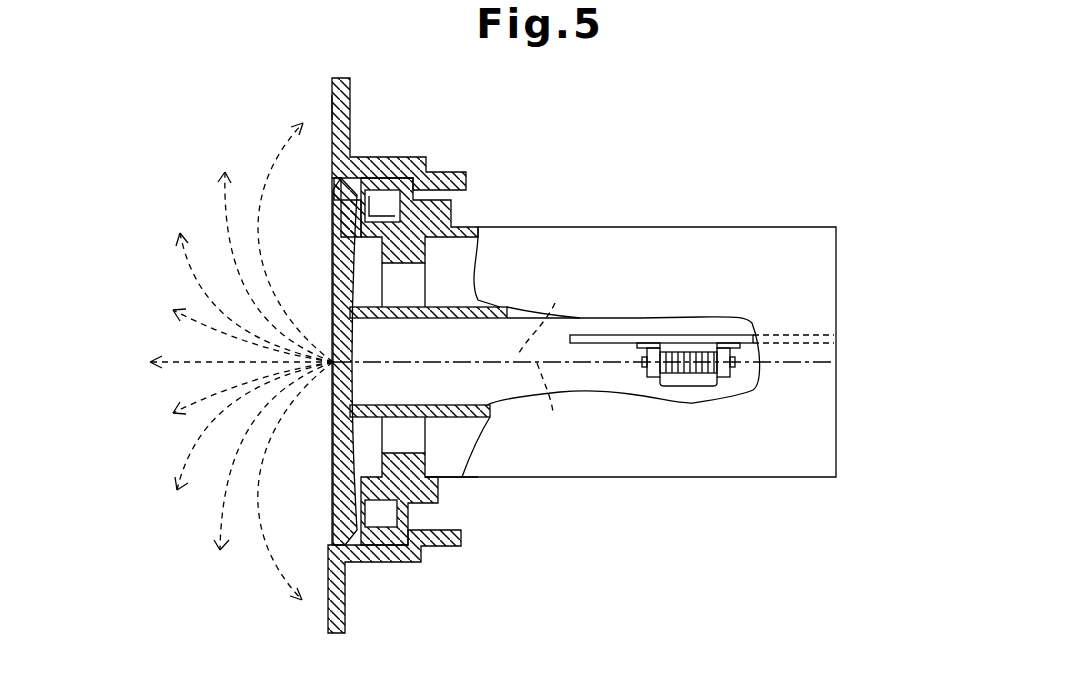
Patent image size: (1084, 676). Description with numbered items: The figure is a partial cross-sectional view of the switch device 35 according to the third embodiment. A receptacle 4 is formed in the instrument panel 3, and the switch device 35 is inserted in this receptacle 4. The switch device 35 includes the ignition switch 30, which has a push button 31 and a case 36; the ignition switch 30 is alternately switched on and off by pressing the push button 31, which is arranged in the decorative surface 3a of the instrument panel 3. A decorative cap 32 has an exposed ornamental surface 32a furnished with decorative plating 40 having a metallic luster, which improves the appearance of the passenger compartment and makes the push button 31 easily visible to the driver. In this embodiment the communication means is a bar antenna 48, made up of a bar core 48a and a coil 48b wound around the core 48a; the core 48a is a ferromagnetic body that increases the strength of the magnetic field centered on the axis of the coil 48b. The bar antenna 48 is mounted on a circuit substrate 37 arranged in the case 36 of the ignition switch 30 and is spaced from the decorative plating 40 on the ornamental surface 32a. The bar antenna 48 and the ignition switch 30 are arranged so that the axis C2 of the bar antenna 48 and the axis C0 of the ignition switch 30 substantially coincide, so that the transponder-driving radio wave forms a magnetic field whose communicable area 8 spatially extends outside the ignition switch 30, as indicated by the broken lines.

The instrument panel 3 is at (367, 104).
The decorative surface 3a is at (332, 107).
The receptacle 4 is at (333, 180).
The communicable area 8 is at (241, 361).
The ignition switch 30 is at (607, 488).
The push button 31 is at (333, 449).
The decorative cap 32 is at (430, 247).
The ornamental surface 32a is at (333, 193).
The switch device 35 is at (759, 184).
The case 36 is at (460, 480).
The circuit substrate 37 is at (602, 336).
The decorative plating 40 is at (338, 228).
The bar antenna 48 is at (744, 394).
The bar core 48a is at (643, 363).
The coil 48b is at (688, 386).
The axis of the ignition switch C0 is at (542, 317).
The axis of the bar antenna C2 is at (549, 405).